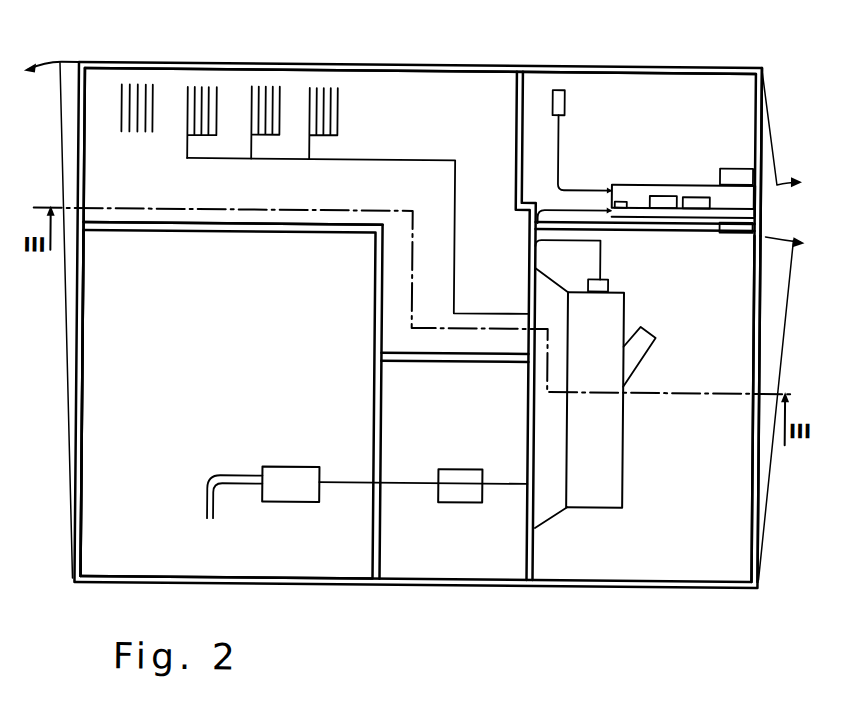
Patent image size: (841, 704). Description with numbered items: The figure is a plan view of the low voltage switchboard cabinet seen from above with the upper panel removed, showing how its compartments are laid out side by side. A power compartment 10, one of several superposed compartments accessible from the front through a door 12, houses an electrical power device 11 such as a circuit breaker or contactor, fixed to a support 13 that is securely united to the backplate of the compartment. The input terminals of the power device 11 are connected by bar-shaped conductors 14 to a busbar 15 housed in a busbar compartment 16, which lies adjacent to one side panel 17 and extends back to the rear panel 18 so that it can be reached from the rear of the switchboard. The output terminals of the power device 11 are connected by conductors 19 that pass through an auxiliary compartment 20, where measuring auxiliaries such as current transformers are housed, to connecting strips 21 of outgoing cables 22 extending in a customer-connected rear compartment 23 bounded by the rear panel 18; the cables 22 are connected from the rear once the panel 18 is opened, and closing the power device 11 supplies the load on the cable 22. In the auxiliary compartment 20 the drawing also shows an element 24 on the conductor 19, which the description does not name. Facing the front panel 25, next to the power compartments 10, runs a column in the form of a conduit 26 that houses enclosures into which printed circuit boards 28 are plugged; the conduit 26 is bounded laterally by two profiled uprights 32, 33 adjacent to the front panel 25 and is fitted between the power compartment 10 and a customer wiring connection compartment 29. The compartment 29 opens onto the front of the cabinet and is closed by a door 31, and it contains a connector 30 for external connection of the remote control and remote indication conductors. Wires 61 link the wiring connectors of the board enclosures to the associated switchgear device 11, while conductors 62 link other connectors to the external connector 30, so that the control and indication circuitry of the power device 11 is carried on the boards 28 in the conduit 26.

The compartment 10 is at (694, 545).
The electrical power device 11 is at (602, 478).
The door 12 is at (764, 501).
The support 13 is at (549, 496).
The conductor 14 is at (376, 156).
The busbar 15 is at (315, 96).
The busbar compartment 16 is at (363, 88).
The side panel 17 is at (148, 58).
The rear panel 18 is at (85, 157).
The conductor 19 is at (359, 485).
The auxiliary compartment 20 is at (494, 553).
The connecting strip 21 is at (302, 488).
The outgoing cable 22 is at (244, 486).
The rear compartment 23 is at (164, 371).
The fuse 24 is at (457, 492).
The front panel 25 is at (764, 352).
The conduit 26 is at (629, 170).
The printed circuit board 28 is at (673, 193).
The customer wiring connection compartment 29 is at (592, 104).
The connector 30 is at (562, 86).
The door 31 is at (763, 142).
The profiled upright 32 is at (739, 171).
The profiled upright 33 is at (745, 223).
The wire 61 is at (602, 260).
The conductor 62 is at (568, 182).